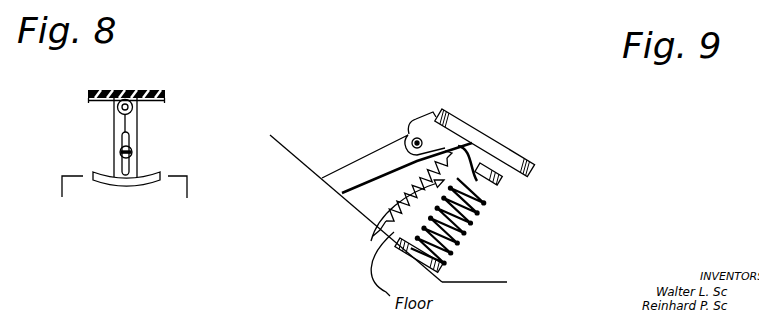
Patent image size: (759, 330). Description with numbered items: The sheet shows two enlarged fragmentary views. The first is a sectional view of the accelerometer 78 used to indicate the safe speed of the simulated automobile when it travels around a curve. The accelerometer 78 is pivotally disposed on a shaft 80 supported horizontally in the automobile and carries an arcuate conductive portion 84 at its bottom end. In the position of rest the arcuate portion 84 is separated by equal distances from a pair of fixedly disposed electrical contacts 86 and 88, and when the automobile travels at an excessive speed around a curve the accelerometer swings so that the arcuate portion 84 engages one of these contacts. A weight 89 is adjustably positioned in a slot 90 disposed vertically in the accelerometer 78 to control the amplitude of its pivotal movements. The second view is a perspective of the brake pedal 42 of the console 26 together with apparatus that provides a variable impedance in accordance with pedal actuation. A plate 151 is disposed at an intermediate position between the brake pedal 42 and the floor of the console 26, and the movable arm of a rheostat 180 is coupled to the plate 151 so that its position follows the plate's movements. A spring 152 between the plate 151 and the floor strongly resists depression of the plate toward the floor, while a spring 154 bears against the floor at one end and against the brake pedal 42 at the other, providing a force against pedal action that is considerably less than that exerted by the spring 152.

In FIG. 8, the shaft 80 is at (133, 100).
In FIG. 8, the accelerometer 78 is at (131, 124).
In FIG. 8, the slot 90 is at (122, 146).
In FIG. 8, the weight 89 is at (130, 151).
In FIG. 8, the arcuate conductive portion 84 is at (122, 185).
In FIG. 8, the electrical contact 86 is at (86, 173).
In FIG. 8, the electrical contact 88 is at (170, 173).
In FIG. 9, the brake pedal 42 is at (500, 152).
In FIG. 9, the spring 154 is at (470, 168).
In FIG. 9, the plate 151 is at (496, 201).
In FIG. 9, the spring 152 is at (458, 235).
In FIG. 9, the rheostat 180 is at (376, 220).
In FIG. 9, the console 26 is at (458, 282).